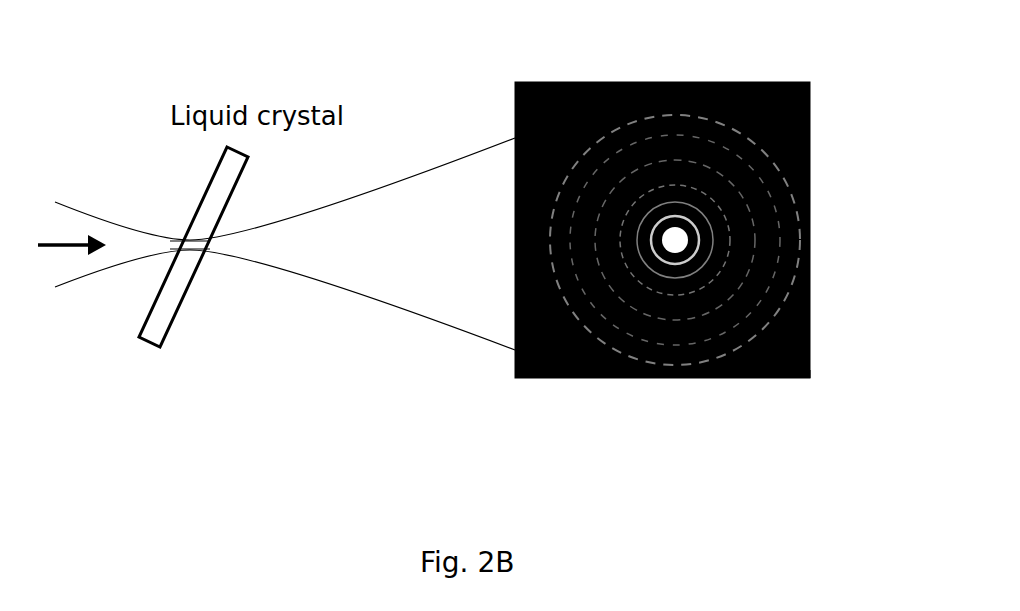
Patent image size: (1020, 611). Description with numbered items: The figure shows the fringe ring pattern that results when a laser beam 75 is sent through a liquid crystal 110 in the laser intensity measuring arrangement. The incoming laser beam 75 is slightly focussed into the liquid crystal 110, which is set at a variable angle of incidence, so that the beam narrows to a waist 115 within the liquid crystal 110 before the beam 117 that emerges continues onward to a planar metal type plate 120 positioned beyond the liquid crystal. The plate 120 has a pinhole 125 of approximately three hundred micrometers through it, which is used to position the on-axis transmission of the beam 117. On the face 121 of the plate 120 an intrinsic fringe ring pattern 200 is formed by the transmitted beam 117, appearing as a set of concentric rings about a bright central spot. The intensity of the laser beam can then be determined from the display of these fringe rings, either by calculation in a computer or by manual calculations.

The laser beam 75 is at (70, 277).
The liquid crystal 110 is at (160, 328).
The beam waist / focal region 115 is at (207, 250).
The beam 117 is at (437, 317).
The plate 120 is at (813, 102).
The pinhole 125 is at (813, 193).
The face 121 is at (854, 373).
The fringe ring pattern 200 is at (702, 378).